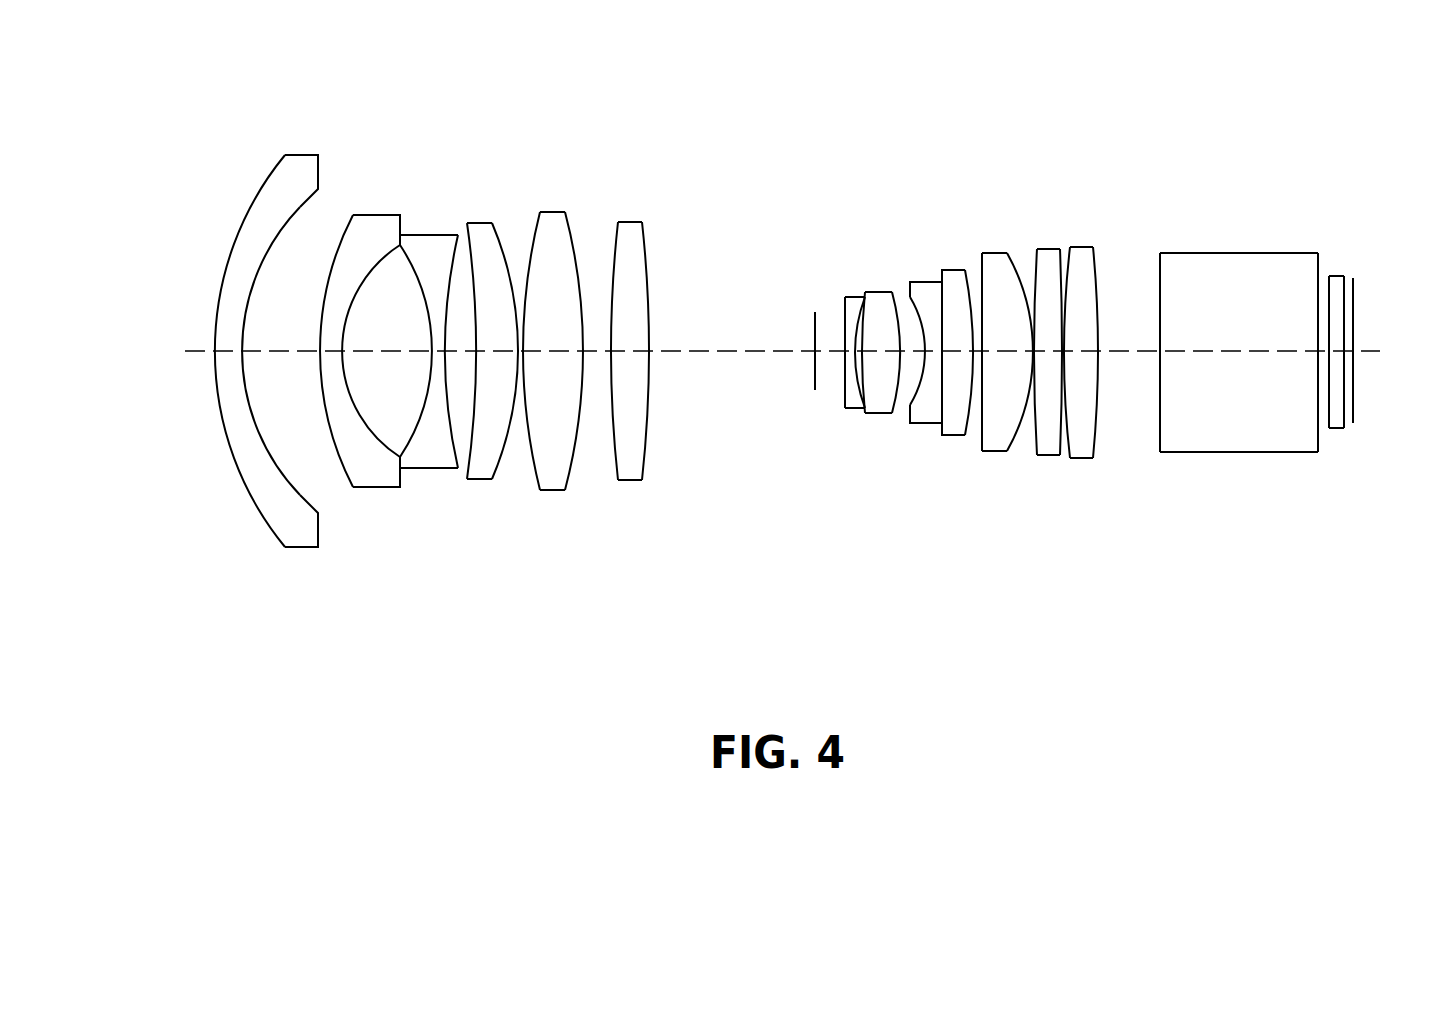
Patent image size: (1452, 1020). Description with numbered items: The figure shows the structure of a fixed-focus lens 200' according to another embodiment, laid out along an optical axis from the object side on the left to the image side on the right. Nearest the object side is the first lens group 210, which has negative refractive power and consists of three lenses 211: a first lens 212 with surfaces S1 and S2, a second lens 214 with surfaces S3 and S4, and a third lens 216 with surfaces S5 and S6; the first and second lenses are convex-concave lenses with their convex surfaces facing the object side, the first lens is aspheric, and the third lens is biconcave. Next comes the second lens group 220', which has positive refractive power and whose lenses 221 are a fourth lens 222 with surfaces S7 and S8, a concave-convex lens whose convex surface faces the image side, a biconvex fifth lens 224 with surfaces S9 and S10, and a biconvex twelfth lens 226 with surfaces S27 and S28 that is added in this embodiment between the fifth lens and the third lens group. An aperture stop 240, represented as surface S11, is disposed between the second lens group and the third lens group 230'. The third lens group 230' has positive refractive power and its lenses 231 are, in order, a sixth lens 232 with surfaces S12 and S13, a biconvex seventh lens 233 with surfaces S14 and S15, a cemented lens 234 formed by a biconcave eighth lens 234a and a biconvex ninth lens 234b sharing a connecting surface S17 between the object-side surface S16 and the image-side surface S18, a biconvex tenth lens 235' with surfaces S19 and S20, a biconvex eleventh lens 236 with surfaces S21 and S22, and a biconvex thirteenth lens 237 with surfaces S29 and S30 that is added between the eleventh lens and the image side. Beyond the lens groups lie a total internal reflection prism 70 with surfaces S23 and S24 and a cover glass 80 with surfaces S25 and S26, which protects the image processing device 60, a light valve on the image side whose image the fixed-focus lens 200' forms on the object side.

The fixed-focus lens 200' is at (786, 411).
The first lens group 210 is at (412, 616).
The lenses 211 is at (290, 354).
The first lens 212 is at (219, 354).
The second lens 214 is at (311, 379).
The third lens 216 is at (398, 379).
The second lens group 220' is at (588, 386).
The lenses 221 is at (589, 359).
The fourth lens 222 is at (494, 379).
The fifth lens 224 is at (576, 379).
The twelfth lens 226 is at (670, 359).
The third lens group 230' is at (1032, 416).
The lenses 231 is at (1032, 388).
The sixth lens 232 is at (791, 406).
The seventh lens 233 is at (851, 406).
The cemented lens 234 is at (1098, 563).
The eighth lens 234a is at (912, 361).
The ninth lens 234b is at (999, 361).
The tenth lens 235' is at (1052, 406).
The eleventh lens 236 is at (1126, 388).
The thirteenth lens 237 is at (1206, 406).
The aperture stop 240 is at (748, 355).
The total internal reflection prism 70 is at (1239, 355).
The cover glass 80 is at (1316, 355).
The image processing device 60 is at (1384, 396).
The surface S1 is at (250, 321).
The surface S2 is at (273, 295).
The surface S3 is at (336, 316).
The surface S4 is at (371, 301).
The surface S5 is at (416, 301).
The surface S6 is at (448, 306).
The surface S7 is at (484, 312).
The surface S8 is at (516, 312).
The surface S9 is at (551, 317).
The surface S10 is at (597, 317).
The surface S11 is at (747, 292).
The surface S12 is at (781, 301).
The surface S13 is at (813, 301).
The surface S14 is at (833, 304).
The surface S15 is at (873, 304).
The surface S16 is at (906, 300).
The connecting surface S17 is at (923, 291).
The surface S18 is at (961, 297).
The surface S19 is at (979, 323).
The surface S20 is at (1023, 323).
The surface S21 is at (1029, 307).
The surface S22 is at (1070, 307).
The surface S23 is at (1186, 323).
The surface S24 is at (1271, 323).
The surface S25 is at (1303, 311).
The surface S26 is at (1340, 311).
The surface S27 is at (647, 312).
The surface S28 is at (686, 292).
The surface S29 is at (1089, 326).
The surface S30 is at (1125, 326).